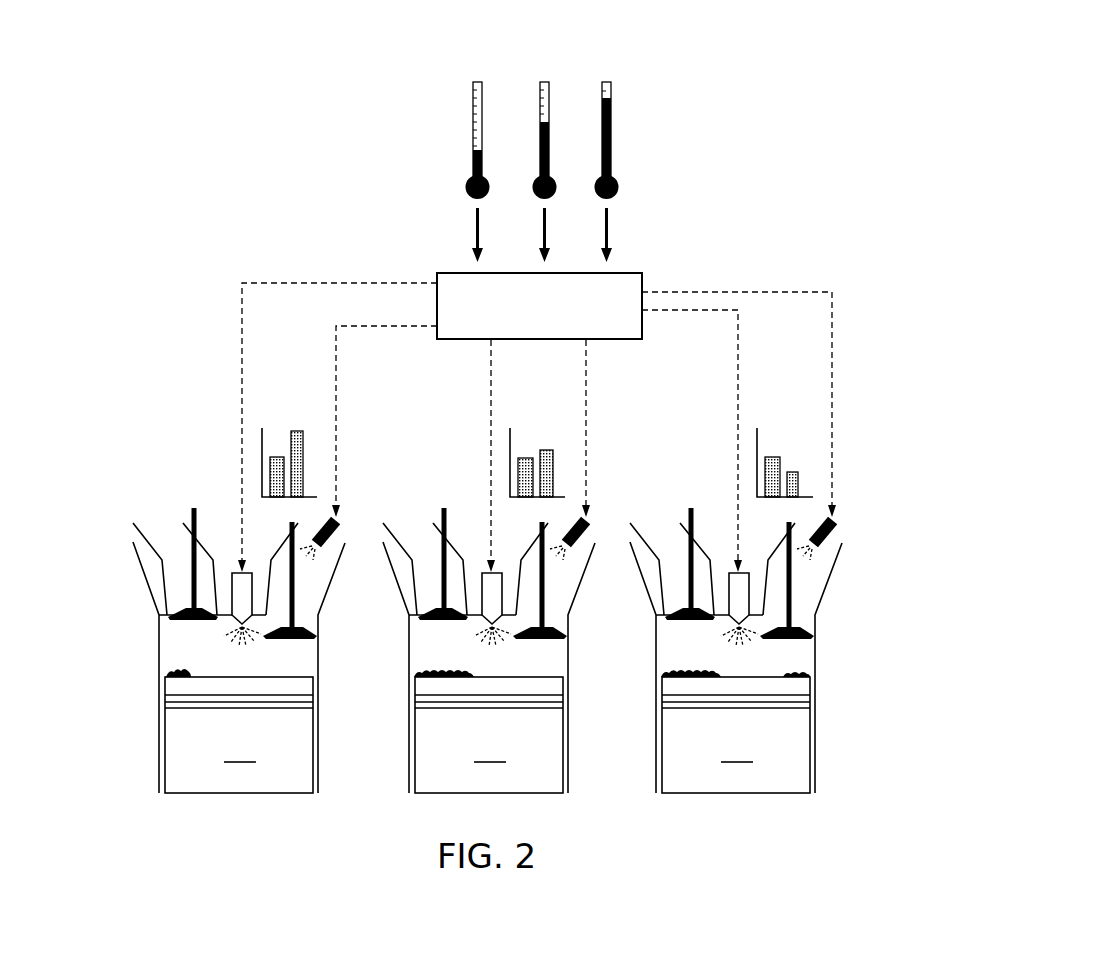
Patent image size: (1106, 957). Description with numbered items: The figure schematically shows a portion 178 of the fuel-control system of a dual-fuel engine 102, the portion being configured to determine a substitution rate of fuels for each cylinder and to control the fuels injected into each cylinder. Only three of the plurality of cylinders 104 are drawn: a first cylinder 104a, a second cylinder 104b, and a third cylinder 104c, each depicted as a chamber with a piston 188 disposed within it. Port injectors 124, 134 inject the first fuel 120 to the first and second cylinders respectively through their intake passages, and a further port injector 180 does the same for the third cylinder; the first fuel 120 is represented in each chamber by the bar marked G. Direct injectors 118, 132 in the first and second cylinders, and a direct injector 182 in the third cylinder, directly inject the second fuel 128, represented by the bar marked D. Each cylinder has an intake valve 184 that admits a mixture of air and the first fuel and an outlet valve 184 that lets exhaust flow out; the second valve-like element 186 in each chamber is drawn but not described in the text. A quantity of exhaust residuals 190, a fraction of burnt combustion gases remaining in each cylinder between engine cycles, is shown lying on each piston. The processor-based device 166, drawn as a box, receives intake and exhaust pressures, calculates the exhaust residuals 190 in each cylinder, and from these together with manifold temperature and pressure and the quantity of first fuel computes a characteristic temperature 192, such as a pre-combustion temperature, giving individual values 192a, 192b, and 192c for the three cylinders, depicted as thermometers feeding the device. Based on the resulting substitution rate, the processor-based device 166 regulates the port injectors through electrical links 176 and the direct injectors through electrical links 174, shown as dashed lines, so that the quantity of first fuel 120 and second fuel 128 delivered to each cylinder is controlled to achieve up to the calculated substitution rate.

The engine 102 is at (927, 274).
The cylinders 104 is at (501, 682).
The first cylinder 104a is at (320, 730).
The second cylinder 104b is at (570, 767).
The third cylinder 104c is at (816, 730).
The direct injector 118 is at (237, 570).
The first fuel 120 is at (305, 455).
The port injector 124 is at (335, 522).
The second fuel 128 is at (272, 478).
The direct injector 132 is at (487, 570).
The port injector 134 is at (585, 522).
The processor-based device 166 is at (642, 286).
The electrical link 174 is at (243, 357).
The electrical link 176 is at (338, 386).
The portion of the system 178 is at (983, 104).
The port injector 180 is at (818, 548).
The direct injector 182 is at (733, 570).
The intake valve 184 is at (292, 638).
The left stirrer / spreader 186 is at (190, 620).
The piston 188 is at (487, 735).
The exhaust residuals 190 is at (170, 678).
The characteristic temperature 192 is at (561, 122).
The characteristic temperature 192a is at (505, 143).
The characteristic temperature 192b is at (575, 143).
The characteristic temperature 192c is at (635, 143).